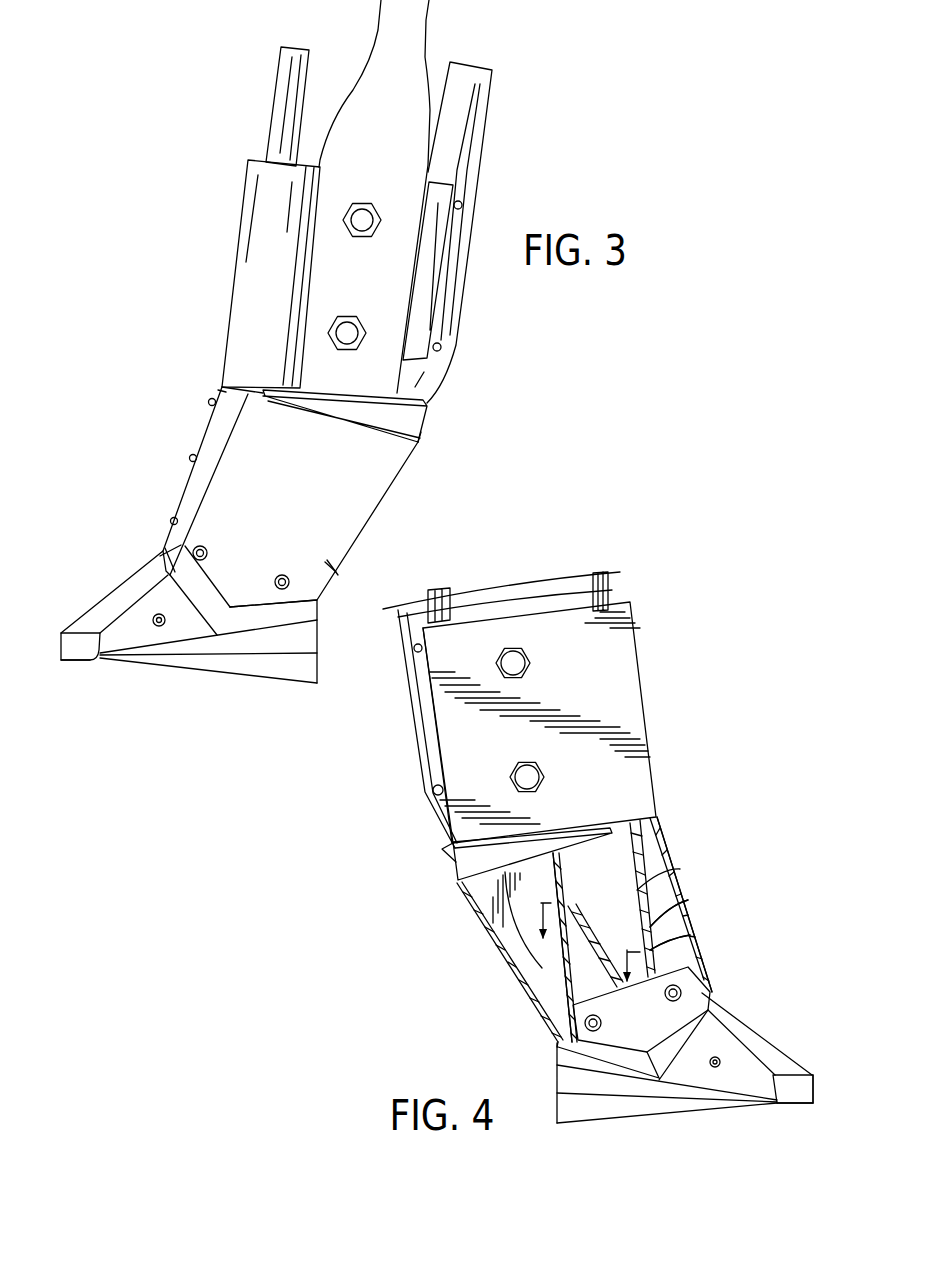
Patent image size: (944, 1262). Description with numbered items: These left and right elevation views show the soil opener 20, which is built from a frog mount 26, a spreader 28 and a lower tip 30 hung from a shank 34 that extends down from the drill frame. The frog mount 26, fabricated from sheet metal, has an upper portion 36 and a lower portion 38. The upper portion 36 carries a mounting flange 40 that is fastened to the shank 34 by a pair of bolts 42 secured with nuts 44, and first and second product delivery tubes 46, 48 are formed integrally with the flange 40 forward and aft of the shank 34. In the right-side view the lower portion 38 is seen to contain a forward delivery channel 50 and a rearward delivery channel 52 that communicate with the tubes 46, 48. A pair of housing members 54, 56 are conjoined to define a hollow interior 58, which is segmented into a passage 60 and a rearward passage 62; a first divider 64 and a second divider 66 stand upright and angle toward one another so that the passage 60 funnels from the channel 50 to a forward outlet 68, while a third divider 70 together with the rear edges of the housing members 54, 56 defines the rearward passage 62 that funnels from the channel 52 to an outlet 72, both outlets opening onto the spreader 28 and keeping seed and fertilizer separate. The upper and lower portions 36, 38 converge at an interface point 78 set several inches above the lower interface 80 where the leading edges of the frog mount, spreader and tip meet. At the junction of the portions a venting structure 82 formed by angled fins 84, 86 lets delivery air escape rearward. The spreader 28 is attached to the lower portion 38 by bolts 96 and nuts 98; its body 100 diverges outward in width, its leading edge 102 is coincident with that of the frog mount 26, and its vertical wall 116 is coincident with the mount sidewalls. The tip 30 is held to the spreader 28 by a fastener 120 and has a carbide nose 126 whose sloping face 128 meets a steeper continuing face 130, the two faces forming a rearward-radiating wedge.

In FIG. 3, the soil opener 20 is at (176, 72).
In FIG. 4, the soil opener 20 is at (702, 588).
In FIG. 3, the frog mount 26 is at (186, 430).
In FIG. 4, the frog mount 26 is at (670, 815).
In FIG. 3, the spreader 28 is at (275, 698).
In FIG. 4, the spreader 28 is at (548, 1104).
In FIG. 3, the lower tip 30 is at (58, 657).
In FIG. 4, the lower tip 30 is at (805, 1049).
In FIG. 3, the shank 34 is at (419, 26).
In FIG. 3, the upper portion 36 is at (265, 265).
In FIG. 4, the upper portion 36 is at (470, 785).
In FIG. 3, the lower portion 38 is at (345, 502).
In FIG. 4, the lower portion 38 is at (538, 959).
In FIG. 4, the mounting flange 40 is at (629, 683).
In FIG. 4, the bolts 42 is at (526, 777).
In FIG. 3, the nuts 44 is at (350, 330).
In FIG. 3, the first product delivery tube 46 is at (289, 63).
In FIG. 4, the first product delivery tube 46 is at (578, 594).
In FIG. 3, the second product delivery tube 48 is at (482, 92).
In FIG. 4, the second product delivery tube 48 is at (410, 620).
In FIG. 4, the forward delivery channel 50 is at (616, 872).
In FIG. 4, the rearward delivery channel 52 is at (556, 978).
In FIG. 4, the housing member 54 is at (510, 932).
In FIG. 3, the housing member 56 is at (335, 568).
In FIG. 4, the hollow interior 58 is at (663, 843).
In FIG. 4, the passage 60 is at (688, 934).
In FIG. 4, the rearward passage 62 is at (541, 908).
In FIG. 4, the first divider 64 is at (688, 898).
In FIG. 4, the second divider 66 is at (611, 960).
In FIG. 4, the forward outlet 68 is at (703, 953).
In FIG. 4, the third divider 70 is at (556, 987).
In FIG. 4, the outlet 72 is at (559, 1047).
In FIG. 3, the interface point 78 is at (214, 384).
In FIG. 3, the interface 80 is at (156, 542).
In FIG. 3, the venting structure 82 is at (432, 430).
In FIG. 4, the venting structure 82 is at (436, 864).
In FIG. 3, the angled fin 84 is at (357, 412).
In FIG. 4, the angled fin 86 is at (560, 838).
In FIG. 3, the bolts 96 is at (283, 574).
In FIG. 4, the nuts 98 is at (656, 1006).
In FIG. 3, the body 100 is at (218, 664).
In FIG. 4, the body 100 is at (668, 1100).
In FIG. 3, the leading edge 102 is at (160, 555).
In FIG. 3, the vertical wall 116 is at (312, 612).
In FIG. 3, the fastener 120 is at (158, 628).
In FIG. 3, the nose 126 is at (76, 656).
In FIG. 4, the nose 126 is at (792, 1097).
In FIG. 4, the sloping face 128 is at (815, 1103).
In FIG. 4, the continuing face 130 is at (768, 1033).